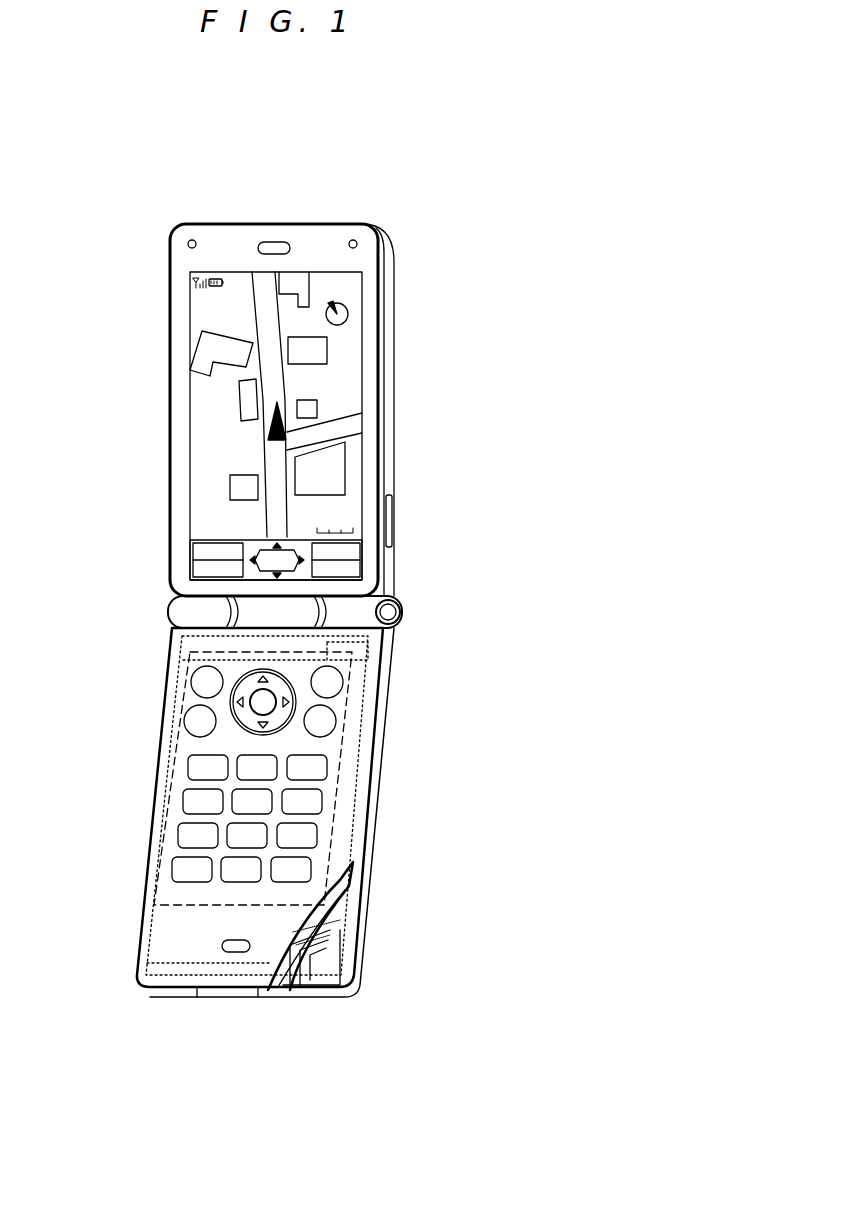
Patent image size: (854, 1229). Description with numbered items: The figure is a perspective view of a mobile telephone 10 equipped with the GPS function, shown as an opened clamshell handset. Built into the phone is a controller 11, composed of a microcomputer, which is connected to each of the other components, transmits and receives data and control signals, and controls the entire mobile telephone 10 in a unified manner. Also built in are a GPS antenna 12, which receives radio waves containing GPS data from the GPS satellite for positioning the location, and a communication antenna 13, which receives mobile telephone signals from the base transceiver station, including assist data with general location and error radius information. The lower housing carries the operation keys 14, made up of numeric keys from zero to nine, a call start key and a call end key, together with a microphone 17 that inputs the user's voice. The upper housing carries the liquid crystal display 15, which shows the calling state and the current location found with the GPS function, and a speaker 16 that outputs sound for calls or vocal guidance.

The mobile telephone equipped with the GPS function 10 is at (392, 188).
The controller 11 is at (330, 938).
The GPS antenna 12 is at (388, 642).
The communication antenna 13 is at (360, 658).
The operation keys 14 is at (176, 740).
The liquid crystal display 15 is at (362, 356).
The speaker 16 is at (278, 240).
The microphone 17 is at (236, 952).